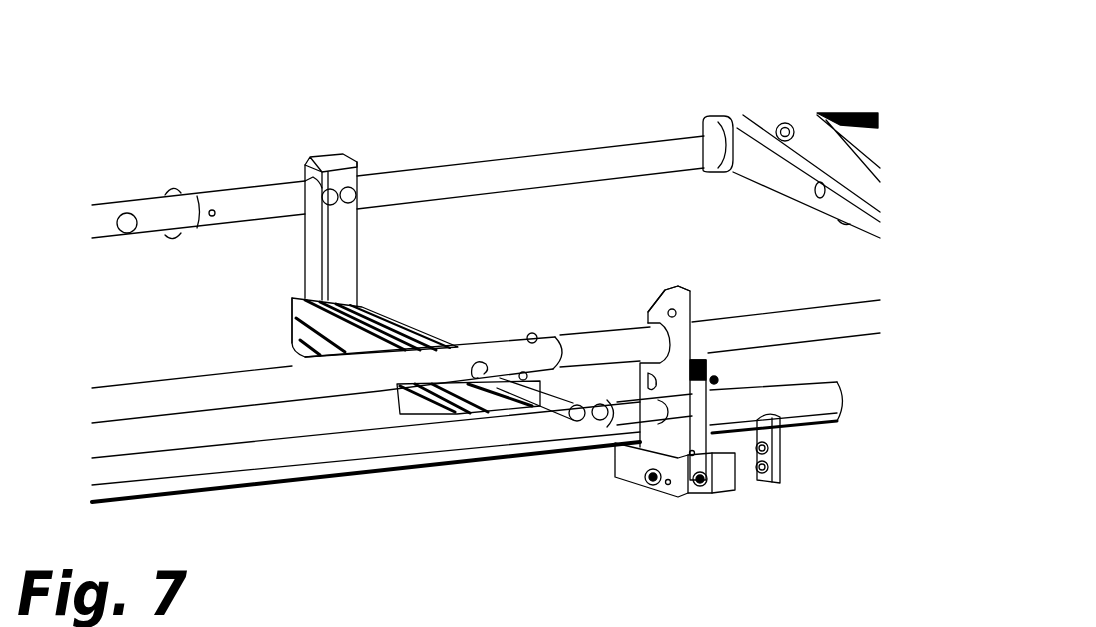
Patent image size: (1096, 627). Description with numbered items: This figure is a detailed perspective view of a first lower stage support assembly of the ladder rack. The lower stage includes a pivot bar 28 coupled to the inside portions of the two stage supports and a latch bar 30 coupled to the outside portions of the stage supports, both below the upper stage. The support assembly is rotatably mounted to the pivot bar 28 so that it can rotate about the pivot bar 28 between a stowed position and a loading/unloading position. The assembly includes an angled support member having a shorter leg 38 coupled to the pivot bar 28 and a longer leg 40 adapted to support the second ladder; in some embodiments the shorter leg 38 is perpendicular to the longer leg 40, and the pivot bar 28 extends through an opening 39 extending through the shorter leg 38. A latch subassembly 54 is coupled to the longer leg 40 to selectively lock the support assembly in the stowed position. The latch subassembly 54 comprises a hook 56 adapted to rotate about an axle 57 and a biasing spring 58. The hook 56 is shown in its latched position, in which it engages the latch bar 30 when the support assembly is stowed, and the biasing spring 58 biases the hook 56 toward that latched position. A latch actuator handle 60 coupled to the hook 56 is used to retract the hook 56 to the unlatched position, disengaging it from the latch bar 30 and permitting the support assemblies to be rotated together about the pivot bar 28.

The pivot bar 28 is at (467, 168).
The latch bar 30 is at (223, 390).
The shorter leg 38 is at (345, 245).
The opening 39 is at (310, 188).
The longer leg 40 is at (403, 318).
The latch subassembly 54 is at (692, 300).
The hook 56 is at (660, 300).
The axle 57 is at (652, 485).
The biasing spring 58 is at (703, 486).
The latch actuator handle 60 is at (453, 432).